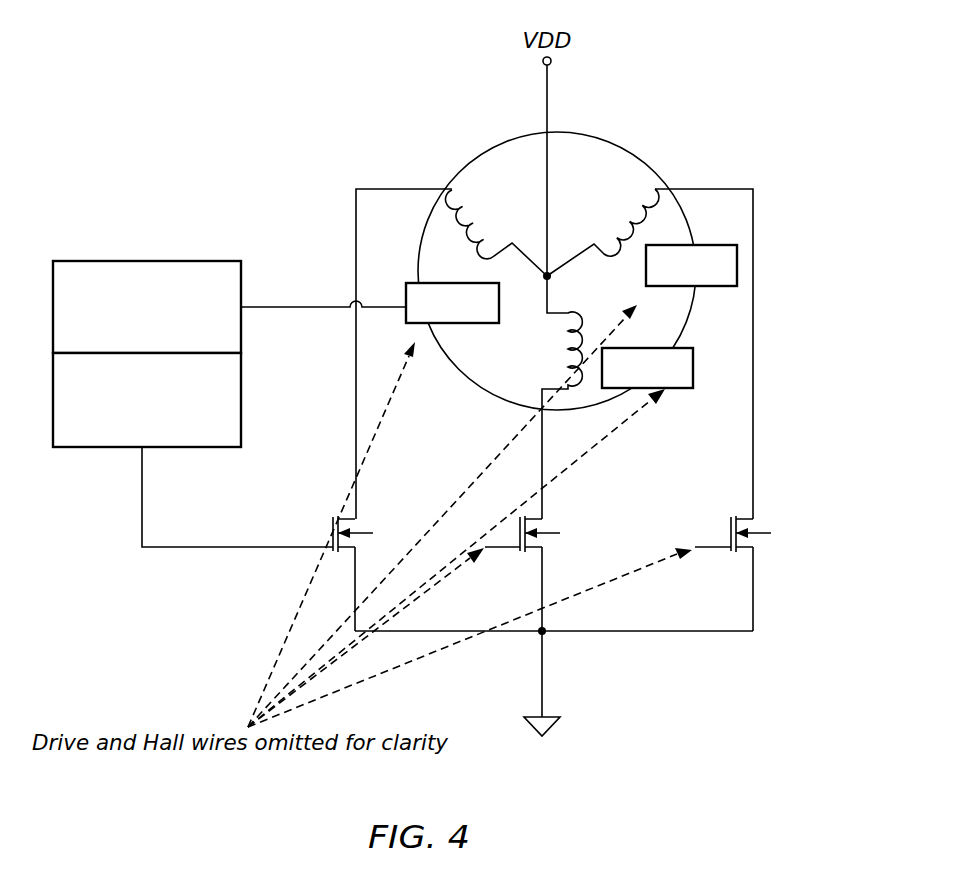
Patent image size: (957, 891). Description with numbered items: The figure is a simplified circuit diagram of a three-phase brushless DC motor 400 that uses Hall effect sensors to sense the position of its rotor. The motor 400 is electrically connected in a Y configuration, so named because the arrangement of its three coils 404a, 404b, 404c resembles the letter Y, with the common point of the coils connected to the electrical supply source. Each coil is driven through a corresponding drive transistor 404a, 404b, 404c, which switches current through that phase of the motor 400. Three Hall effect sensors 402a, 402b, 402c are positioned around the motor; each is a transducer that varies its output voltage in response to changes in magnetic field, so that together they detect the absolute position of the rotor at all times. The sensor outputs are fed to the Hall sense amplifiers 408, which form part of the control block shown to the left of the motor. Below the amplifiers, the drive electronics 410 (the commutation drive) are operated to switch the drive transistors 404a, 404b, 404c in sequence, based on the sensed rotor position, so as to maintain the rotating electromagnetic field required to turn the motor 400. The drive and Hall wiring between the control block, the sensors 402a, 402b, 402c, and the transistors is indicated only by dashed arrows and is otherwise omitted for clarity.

The brushless DC motor 400 is at (691, 104).
The Hall effect sensor 402a is at (710, 287).
The Hall effect sensor 402b is at (678, 388).
The Hall effect sensor 402c is at (410, 282).
The drive transistor 404a is at (619, 240).
The drive transistor 404b is at (560, 356).
The drive transistor 404c is at (483, 242).
The Hall sense amplifiers 408 is at (113, 261).
The drive electronics 410 is at (101, 447).